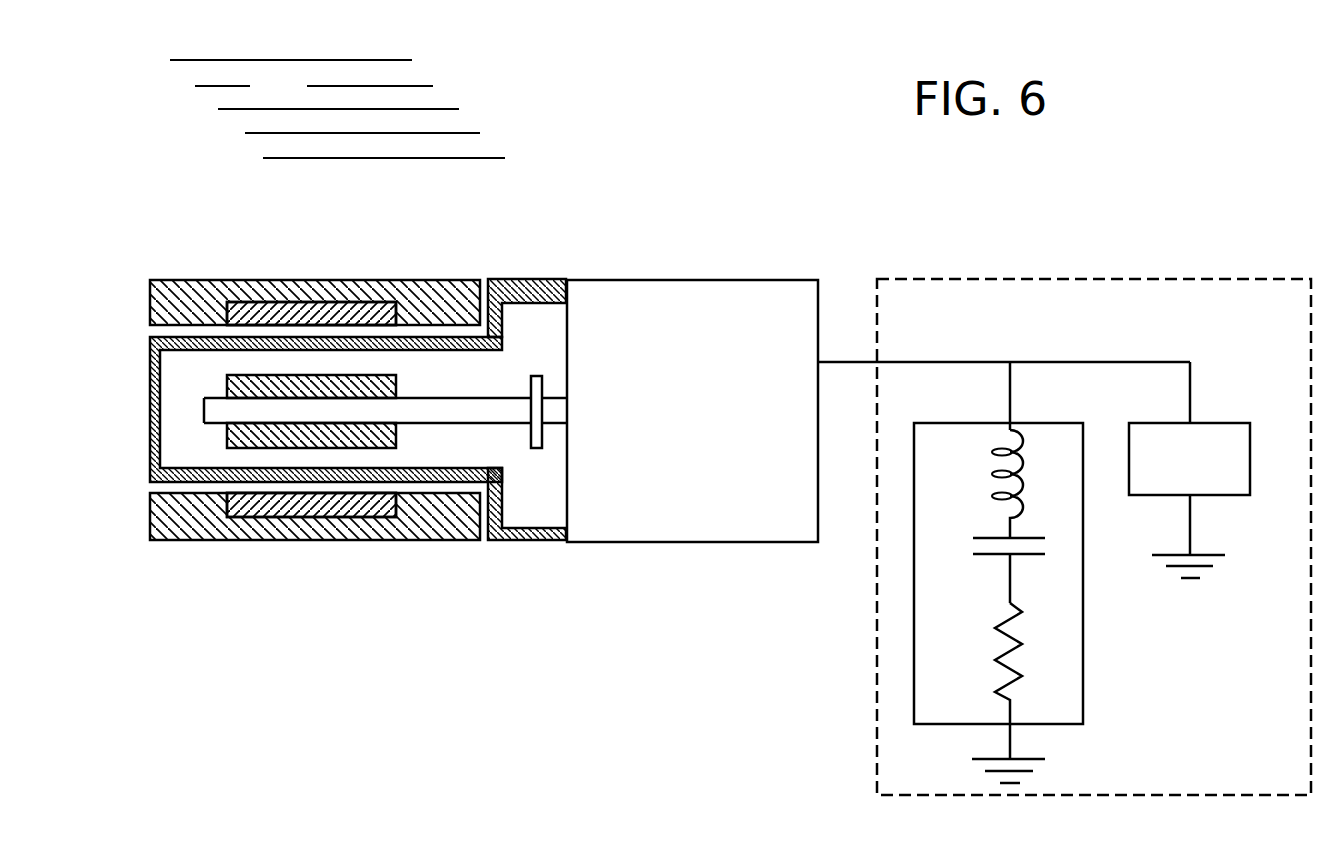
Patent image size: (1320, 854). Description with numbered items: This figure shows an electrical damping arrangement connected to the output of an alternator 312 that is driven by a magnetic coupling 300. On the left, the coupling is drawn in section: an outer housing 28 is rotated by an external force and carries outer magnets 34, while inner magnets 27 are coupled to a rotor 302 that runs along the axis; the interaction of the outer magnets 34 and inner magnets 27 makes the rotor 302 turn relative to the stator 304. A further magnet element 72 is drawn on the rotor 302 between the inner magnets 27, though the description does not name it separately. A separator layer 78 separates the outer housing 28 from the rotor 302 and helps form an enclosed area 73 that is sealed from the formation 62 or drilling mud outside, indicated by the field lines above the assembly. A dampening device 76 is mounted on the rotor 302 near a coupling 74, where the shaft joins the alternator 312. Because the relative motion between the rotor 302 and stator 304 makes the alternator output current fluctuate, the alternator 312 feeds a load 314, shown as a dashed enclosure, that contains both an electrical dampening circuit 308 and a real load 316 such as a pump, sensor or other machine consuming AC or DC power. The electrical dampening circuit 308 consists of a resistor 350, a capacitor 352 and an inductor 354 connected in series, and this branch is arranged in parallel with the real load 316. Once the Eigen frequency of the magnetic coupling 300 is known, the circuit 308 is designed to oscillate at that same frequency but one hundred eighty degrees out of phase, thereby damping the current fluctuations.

The formation 62 is at (337, 109).
The stator 304 is at (168, 280).
The outer magnets 34 is at (297, 307).
The outer housing 28 is at (378, 533).
The separator layer 78 is at (505, 288).
The rotor 302 is at (218, 412).
The movable magnet 72 is at (360, 368).
The inner magnets 27 is at (396, 379).
The dampening device 76 is at (526, 390).
The coupling 74 is at (543, 446).
The enclosed area 73 is at (546, 503).
The magnetic coupling 300 is at (227, 565).
The alternator 312 is at (717, 424).
The load 314 is at (877, 607).
The electrical dampening circuit 308 is at (947, 423).
The inductor 354 is at (1008, 493).
The capacitor 352 is at (990, 557).
The resistor 350 is at (996, 631).
The real load 316 is at (1212, 472).